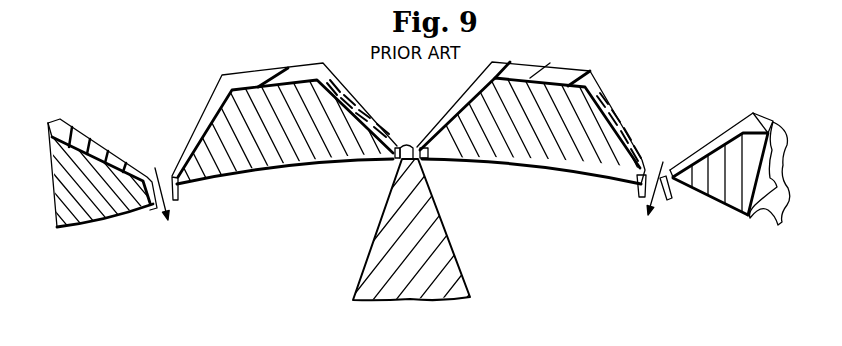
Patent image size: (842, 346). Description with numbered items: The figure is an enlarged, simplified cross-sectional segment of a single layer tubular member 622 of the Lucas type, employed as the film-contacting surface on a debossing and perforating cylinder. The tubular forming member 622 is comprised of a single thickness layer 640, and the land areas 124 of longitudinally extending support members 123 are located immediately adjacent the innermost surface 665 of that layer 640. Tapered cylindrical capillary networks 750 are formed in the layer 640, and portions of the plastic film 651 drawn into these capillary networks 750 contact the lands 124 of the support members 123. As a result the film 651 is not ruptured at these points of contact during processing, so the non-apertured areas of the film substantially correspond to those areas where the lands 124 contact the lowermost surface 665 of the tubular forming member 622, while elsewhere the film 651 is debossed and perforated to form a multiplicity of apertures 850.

The single layer tubular member 622 is at (137, 77).
The plastic film 651 is at (295, 73).
The innermost surface 665 is at (222, 180).
The land areas 124 is at (380, 160).
The longitudinally extending support members 123 is at (438, 242).
The tapered cylindrical capillary networks 750 is at (98, 157).
The apertures 850 is at (175, 183).
The single thickness layer 640 is at (782, 222).